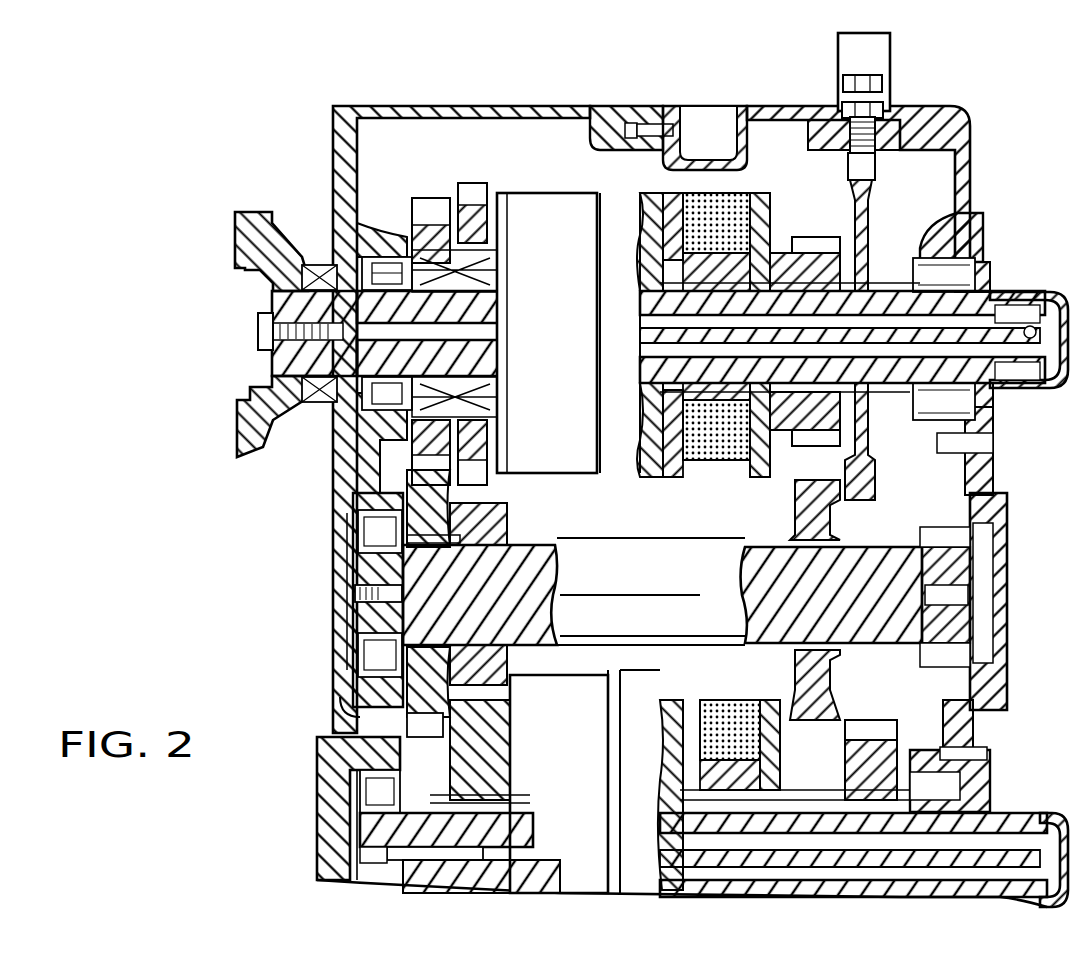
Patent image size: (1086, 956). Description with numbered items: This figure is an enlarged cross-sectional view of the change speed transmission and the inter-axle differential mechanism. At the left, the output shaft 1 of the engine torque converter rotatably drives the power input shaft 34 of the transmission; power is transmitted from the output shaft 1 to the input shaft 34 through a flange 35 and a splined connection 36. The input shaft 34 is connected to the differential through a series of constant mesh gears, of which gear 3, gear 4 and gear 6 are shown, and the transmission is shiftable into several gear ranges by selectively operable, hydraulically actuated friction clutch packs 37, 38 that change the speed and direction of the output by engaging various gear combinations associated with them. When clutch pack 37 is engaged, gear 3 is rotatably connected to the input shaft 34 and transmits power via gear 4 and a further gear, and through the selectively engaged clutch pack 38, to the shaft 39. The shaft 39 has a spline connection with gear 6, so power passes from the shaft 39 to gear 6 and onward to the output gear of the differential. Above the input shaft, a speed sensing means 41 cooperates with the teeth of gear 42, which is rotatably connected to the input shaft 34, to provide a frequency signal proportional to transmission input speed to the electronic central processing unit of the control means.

The output shaft 1 is at (225, 335).
The gear 3 is at (810, 235).
The gear 4 is at (805, 490).
The gear 6 is at (880, 717).
The power input shaft 34 is at (383, 305).
The flange 35 is at (258, 207).
The splined connection 36 is at (308, 263).
The clutch pack 37 is at (743, 190).
The clutch pack 38 is at (805, 700).
The shaft 39 is at (413, 823).
The speed sensing means 41 is at (890, 80).
The gear 42 is at (875, 183).